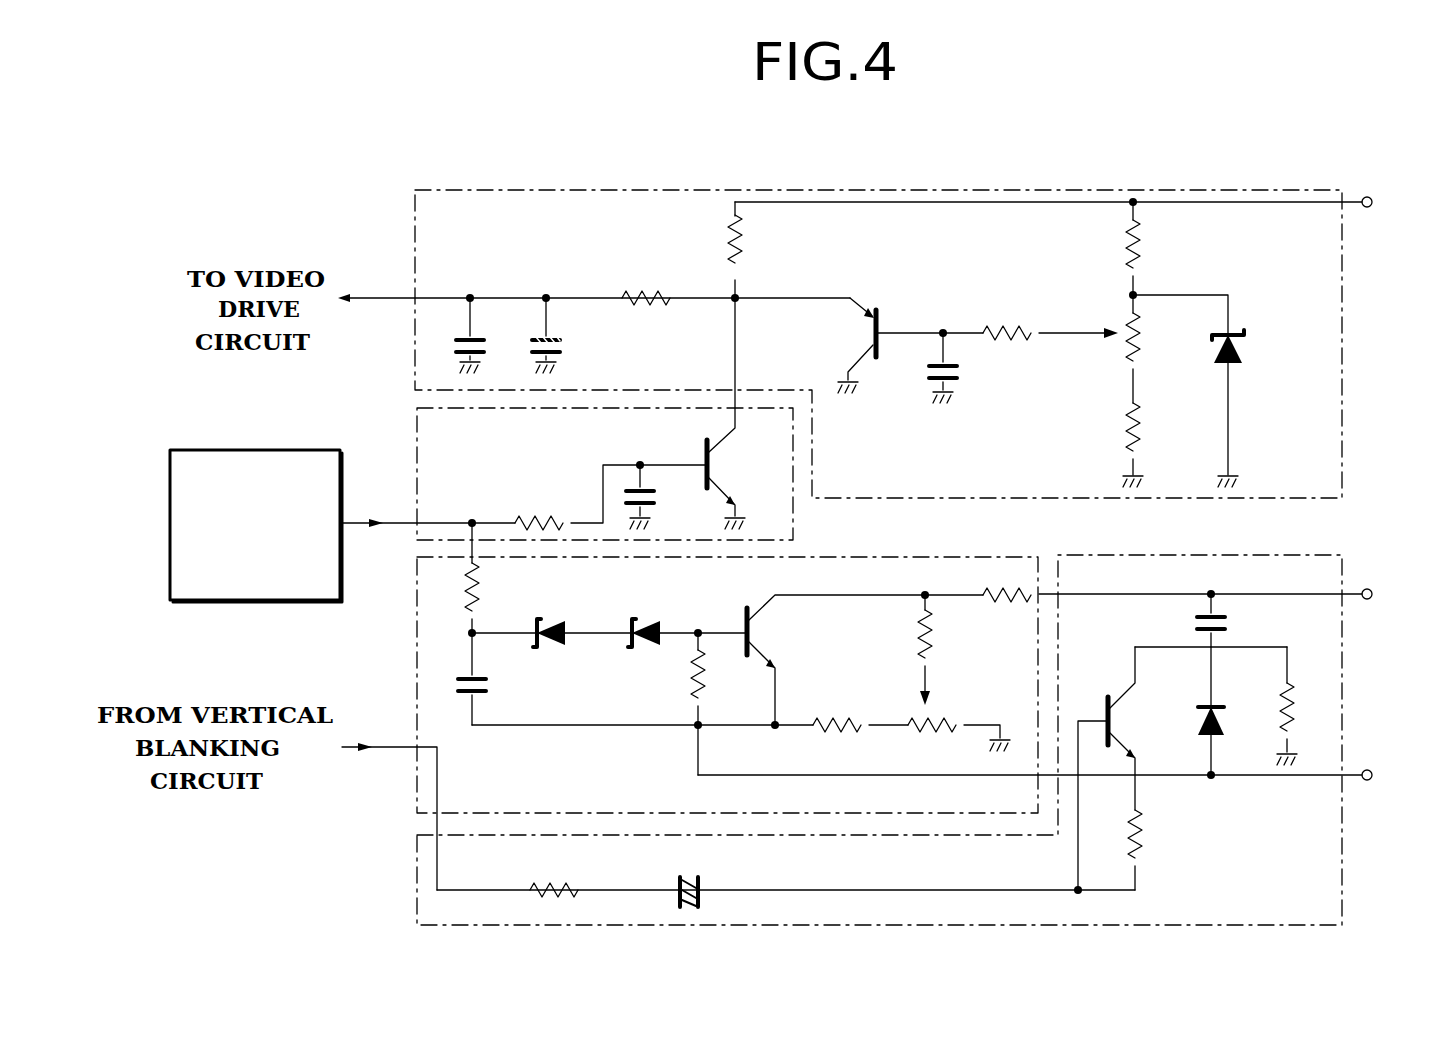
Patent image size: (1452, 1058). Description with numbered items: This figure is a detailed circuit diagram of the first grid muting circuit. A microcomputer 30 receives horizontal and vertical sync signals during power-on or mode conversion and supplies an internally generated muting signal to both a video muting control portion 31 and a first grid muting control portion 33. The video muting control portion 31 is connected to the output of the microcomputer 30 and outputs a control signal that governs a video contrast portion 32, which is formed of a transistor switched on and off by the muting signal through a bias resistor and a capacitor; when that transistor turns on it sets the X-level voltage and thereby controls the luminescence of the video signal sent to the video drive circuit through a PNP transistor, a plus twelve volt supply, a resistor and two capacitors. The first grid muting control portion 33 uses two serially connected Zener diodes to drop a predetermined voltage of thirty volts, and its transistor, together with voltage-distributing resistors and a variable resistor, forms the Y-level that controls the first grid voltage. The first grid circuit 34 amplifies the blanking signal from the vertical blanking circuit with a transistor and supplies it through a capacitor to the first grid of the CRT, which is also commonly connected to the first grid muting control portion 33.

The microcomputer 30 is at (243, 602).
The video muting control portion 31 is at (1342, 405).
The video contrast portion 32 is at (417, 423).
The first grid muting control portion 33 is at (417, 800).
The first grid circuit 34 is at (417, 918).